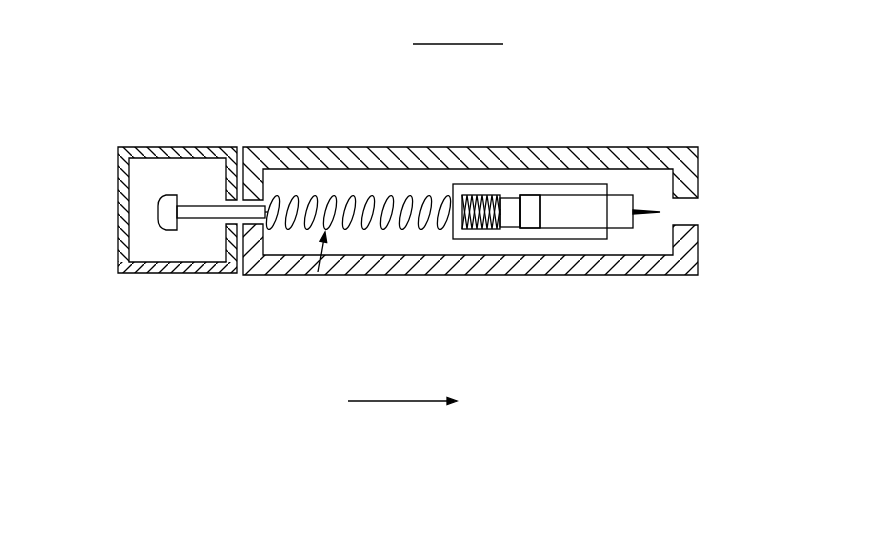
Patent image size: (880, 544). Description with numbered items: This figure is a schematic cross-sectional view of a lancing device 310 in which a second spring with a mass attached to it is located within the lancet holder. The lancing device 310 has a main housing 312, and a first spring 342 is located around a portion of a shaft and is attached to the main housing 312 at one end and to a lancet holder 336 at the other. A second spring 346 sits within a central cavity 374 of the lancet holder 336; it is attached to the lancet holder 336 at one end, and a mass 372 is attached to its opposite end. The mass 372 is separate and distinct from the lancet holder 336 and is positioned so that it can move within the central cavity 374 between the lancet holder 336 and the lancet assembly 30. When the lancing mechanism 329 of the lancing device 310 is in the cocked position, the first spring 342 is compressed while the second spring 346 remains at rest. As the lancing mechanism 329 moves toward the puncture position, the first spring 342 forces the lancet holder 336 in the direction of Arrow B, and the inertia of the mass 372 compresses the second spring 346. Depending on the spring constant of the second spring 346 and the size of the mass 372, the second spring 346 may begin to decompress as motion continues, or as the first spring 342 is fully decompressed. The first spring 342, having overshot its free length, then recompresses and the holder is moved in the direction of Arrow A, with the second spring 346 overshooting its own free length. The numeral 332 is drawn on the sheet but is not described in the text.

The lancing device 310 is at (101, 95).
The main housing 312 is at (405, 275).
The piston rod 332 is at (378, 205).
The first spring 342 is at (290, 200).
The lancing mechanism 329 is at (318, 272).
The lancet holder 336 is at (607, 187).
The second spring 346 is at (483, 197).
The mass 372 is at (510, 222).
The central cavity 374 is at (533, 222).
The lancet assembly 30 is at (654, 186).